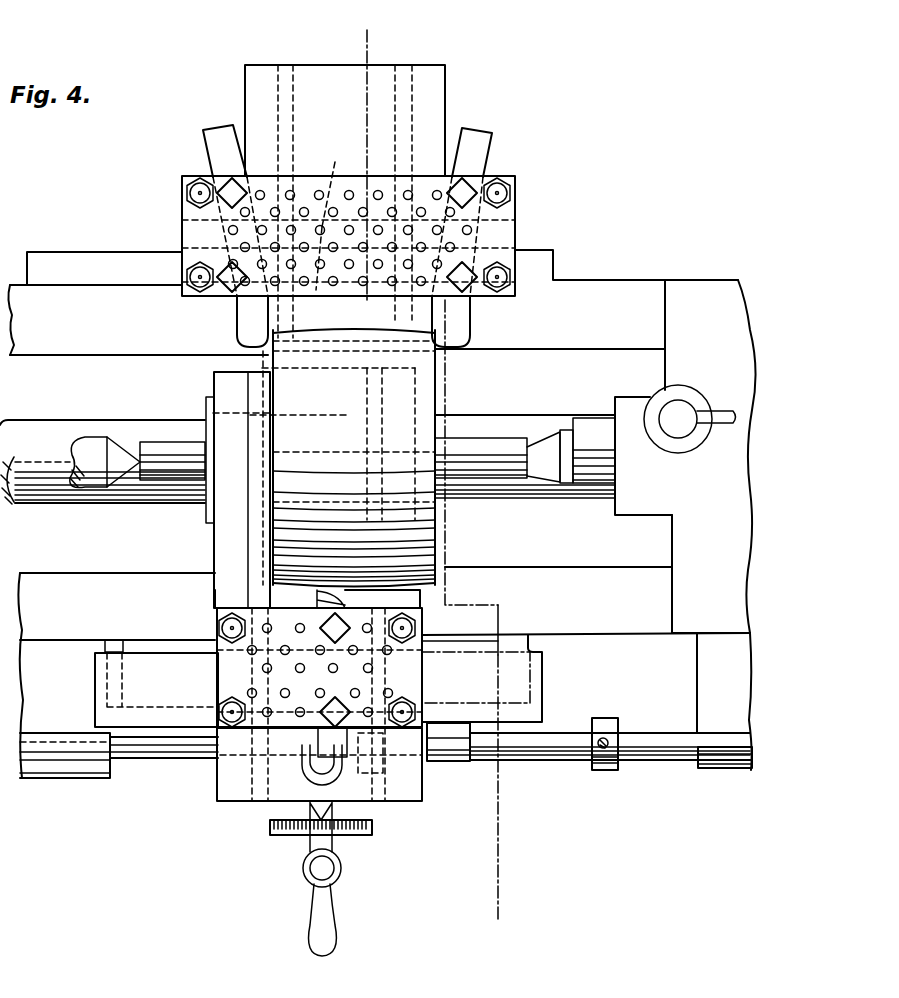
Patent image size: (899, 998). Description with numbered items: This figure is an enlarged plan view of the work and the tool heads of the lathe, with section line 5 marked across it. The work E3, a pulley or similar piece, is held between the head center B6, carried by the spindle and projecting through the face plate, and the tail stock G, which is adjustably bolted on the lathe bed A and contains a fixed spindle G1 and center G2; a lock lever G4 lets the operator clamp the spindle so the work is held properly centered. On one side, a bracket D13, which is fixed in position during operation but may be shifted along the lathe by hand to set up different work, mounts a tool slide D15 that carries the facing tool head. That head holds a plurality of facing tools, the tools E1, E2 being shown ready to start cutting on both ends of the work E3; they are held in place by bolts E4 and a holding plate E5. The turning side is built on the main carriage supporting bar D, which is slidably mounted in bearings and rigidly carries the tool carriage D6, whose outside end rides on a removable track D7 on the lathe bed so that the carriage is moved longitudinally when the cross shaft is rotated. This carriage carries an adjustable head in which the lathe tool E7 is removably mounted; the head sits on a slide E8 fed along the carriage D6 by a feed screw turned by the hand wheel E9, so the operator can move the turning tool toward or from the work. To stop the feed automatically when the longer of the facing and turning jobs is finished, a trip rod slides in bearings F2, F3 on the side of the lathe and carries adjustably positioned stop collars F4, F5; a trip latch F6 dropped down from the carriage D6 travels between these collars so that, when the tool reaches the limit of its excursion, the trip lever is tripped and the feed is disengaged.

The section line 5- 5 is at (400, 35).
The lathe bed A is at (623, 295).
The tail stock G is at (702, 293).
The lock lever G4 is at (685, 428).
The center G2 is at (550, 447).
The fixed spindle G1 is at (593, 432).
The tool slide D15 is at (267, 78).
The bracket D13 is at (324, 213).
The facing tool E2 is at (218, 142).
The facing tool E1 is at (475, 145).
The bolts E4 is at (245, 280).
The holding plate E5 is at (505, 238).
The work E3 is at (330, 392).
The main carriage supporting bar D is at (136, 422).
The center B6 is at (90, 447).
The tool carriage D6 is at (228, 540).
The removable track D7 is at (135, 677).
The bearing F2 is at (75, 722).
The lathe tool E7 is at (317, 590).
The slide E8 is at (238, 778).
The hand wheel E9 is at (320, 845).
The stop collar F4 is at (383, 773).
The trip latch F6 is at (448, 733).
The stop collar F5 is at (603, 727).
The bearing F3 is at (717, 699).